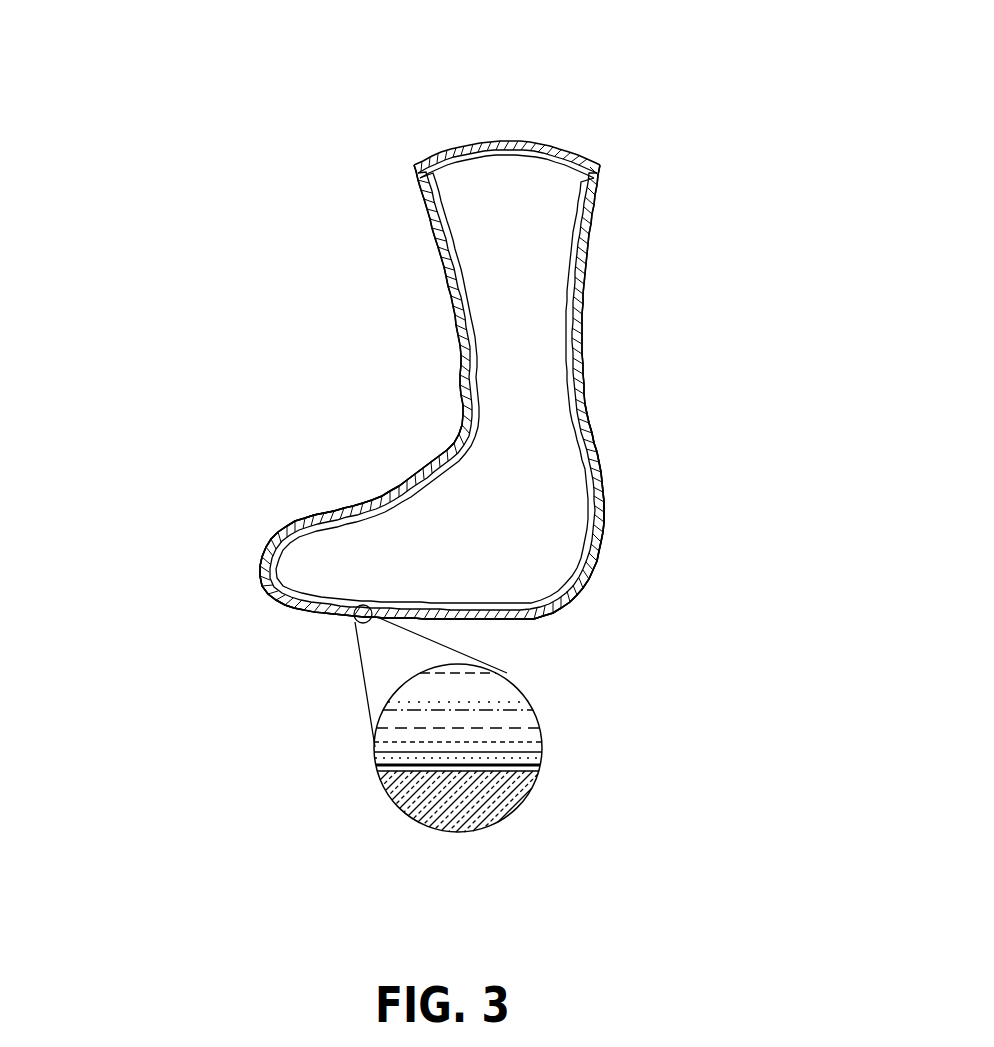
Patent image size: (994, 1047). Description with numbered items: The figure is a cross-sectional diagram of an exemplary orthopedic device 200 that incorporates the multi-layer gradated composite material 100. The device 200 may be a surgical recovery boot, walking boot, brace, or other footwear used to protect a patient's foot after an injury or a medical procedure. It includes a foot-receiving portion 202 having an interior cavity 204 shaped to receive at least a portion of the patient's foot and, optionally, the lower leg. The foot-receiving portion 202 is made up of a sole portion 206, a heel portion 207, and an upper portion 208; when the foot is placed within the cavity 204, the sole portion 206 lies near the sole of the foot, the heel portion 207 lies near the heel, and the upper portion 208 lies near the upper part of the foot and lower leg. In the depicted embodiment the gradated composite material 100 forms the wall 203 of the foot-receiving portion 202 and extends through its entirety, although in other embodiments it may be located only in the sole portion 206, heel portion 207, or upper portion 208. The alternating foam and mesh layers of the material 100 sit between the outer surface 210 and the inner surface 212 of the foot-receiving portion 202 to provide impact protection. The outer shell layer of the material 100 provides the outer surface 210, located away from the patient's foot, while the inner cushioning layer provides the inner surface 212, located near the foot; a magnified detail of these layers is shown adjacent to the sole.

The multi-layer gradated composite material 100 is at (550, 821).
The orthopedic device 200 is at (521, 119).
The foot-receiving portion 202 is at (241, 543).
The wall 203 is at (590, 440).
The interior cavity 204 is at (535, 504).
The sole portion 206 is at (302, 616).
The heel portion 207 is at (602, 543).
The upper portion 208 is at (397, 492).
The outer surface 210 is at (362, 623).
The inner surface 212 is at (535, 611).